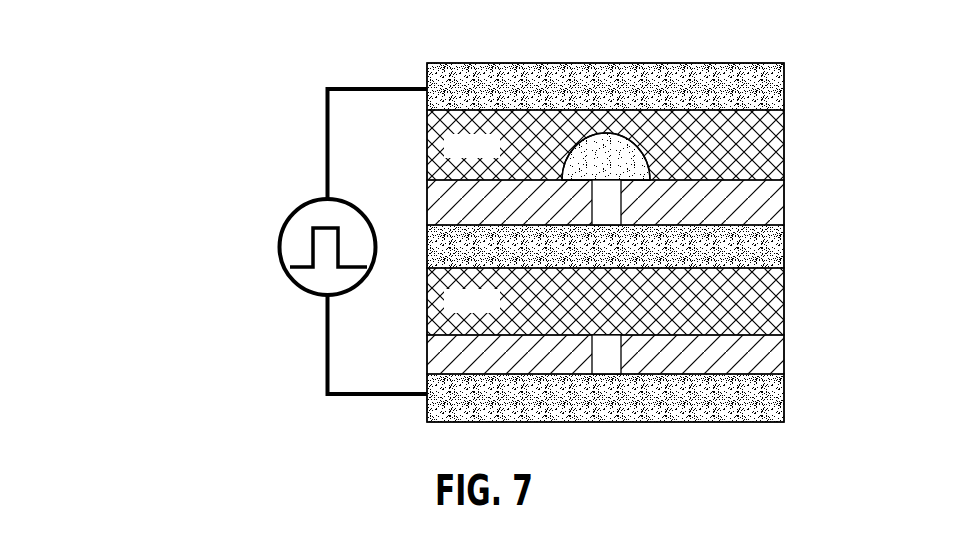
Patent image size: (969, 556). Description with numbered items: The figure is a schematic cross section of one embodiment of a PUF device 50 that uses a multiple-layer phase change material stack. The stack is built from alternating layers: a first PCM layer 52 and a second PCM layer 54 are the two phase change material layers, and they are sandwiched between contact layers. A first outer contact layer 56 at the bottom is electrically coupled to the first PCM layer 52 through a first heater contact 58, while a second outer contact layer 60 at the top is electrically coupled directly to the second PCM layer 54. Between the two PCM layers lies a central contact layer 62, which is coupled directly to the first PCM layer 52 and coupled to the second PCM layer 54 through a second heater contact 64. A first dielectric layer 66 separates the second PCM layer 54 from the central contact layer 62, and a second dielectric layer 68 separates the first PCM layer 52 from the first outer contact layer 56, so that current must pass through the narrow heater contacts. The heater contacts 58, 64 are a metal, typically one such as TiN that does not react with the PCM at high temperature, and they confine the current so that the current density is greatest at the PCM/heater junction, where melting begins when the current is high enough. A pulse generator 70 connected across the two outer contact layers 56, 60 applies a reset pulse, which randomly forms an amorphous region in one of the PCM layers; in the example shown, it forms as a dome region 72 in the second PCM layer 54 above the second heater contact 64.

The PUF device 50 is at (202, 44).
The first PCM layer 52 is at (747, 314).
The second PCM layer 54 is at (747, 156).
The first outer contact layer 56 is at (747, 412).
The first heater contact 58 is at (608, 357).
The second outer contact layer 60 is at (620, 98).
The central contact layer 62 is at (747, 258).
The second heater contact 64 is at (602, 201).
The first dielectric layer 66 is at (747, 216).
The second dielectric layer 68 is at (747, 366).
The pulse generator 70 is at (290, 276).
The dome region 72 is at (623, 150).